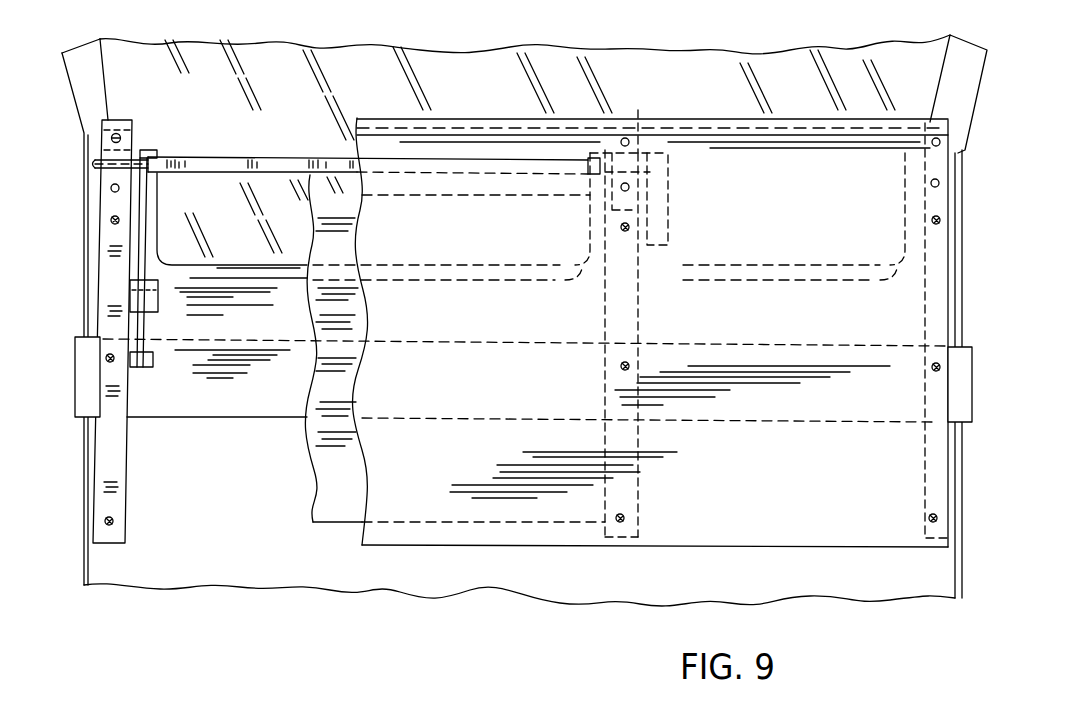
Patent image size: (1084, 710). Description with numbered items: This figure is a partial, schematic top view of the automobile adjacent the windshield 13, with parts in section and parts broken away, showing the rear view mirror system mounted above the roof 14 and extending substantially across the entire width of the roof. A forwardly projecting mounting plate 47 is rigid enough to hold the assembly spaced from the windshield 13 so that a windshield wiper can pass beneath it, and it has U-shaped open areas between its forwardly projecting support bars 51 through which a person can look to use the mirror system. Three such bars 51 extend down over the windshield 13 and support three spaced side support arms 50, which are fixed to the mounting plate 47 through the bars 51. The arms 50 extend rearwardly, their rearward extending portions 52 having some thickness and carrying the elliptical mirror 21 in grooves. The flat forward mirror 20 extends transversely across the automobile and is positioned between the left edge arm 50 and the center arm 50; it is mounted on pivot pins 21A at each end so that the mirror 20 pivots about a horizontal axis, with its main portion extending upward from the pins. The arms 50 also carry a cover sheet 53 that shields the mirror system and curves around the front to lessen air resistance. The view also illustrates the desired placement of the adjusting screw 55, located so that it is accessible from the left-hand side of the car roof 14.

The windshield 13 is at (483, 73).
The roof 14 is at (815, 578).
The flat forward mirror 20 is at (273, 162).
The elliptical mirror 21 is at (333, 481).
The pivot pin 21A is at (140, 160).
The mounting plate 47 is at (283, 306).
The side support arm 50 is at (137, 133).
The forwardly projecting support bar 51 is at (152, 210).
The rearward extending portion 52 is at (115, 463).
The cover sheet 53 is at (433, 507).
The adjusting screw 55 is at (148, 367).